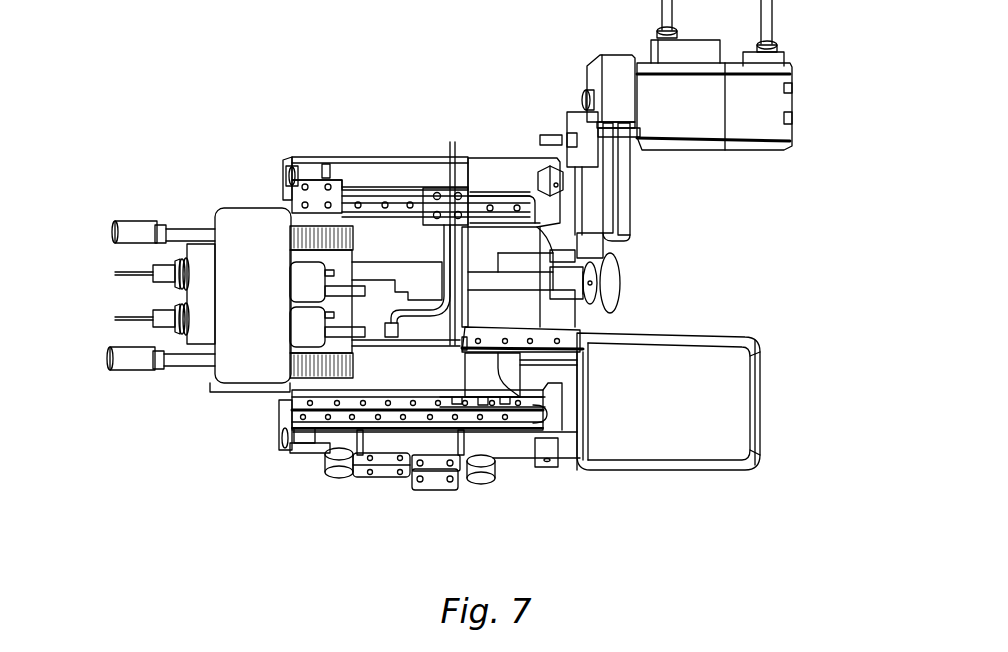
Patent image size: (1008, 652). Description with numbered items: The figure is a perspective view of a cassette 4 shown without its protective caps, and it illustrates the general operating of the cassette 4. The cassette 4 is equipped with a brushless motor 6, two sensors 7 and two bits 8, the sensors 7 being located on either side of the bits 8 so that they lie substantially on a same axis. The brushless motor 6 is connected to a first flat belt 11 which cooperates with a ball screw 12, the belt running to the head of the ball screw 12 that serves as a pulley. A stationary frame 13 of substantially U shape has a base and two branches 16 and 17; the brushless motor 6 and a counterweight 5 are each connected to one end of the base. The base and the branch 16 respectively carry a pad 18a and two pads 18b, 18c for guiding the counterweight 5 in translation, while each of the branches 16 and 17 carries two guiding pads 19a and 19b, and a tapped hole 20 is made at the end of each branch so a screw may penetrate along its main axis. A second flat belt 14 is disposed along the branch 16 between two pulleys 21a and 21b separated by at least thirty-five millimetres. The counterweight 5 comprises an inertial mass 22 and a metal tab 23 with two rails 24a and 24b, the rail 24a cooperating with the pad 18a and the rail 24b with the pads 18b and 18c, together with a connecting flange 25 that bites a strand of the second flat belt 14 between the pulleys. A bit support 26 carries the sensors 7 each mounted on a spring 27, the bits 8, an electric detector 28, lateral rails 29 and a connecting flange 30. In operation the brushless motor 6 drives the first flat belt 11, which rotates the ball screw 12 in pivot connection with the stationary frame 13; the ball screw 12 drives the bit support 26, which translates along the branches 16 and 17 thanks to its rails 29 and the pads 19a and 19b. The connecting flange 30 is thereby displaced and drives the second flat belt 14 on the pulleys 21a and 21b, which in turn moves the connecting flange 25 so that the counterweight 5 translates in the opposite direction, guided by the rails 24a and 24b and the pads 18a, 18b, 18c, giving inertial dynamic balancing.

The cassette 4 is at (219, 66).
The counterweight 5 is at (742, 382).
The brushless motor 6 is at (802, 98).
The sensors 7 is at (112, 230).
The bits 8 is at (112, 271).
The first flat belt 11 is at (638, 245).
The ball screw 12 is at (645, 286).
The stationary frame 13 is at (500, 148).
The second flat belt 14 is at (460, 492).
The branch 16 is at (318, 452).
The branch 17 is at (358, 156).
The pad 18a is at (578, 318).
The pad 18b is at (548, 440).
The pad 18c is at (330, 430).
The guiding pad 19a is at (438, 186).
The guiding pad 19b is at (322, 166).
The tapped hole 20 is at (284, 154).
The pulley 21a is at (339, 480).
The pulley 21b is at (489, 486).
The inertial mass 22 is at (758, 420).
The metal tab 23 is at (512, 370).
The rail 24a is at (583, 357).
The rail 24b is at (572, 440).
The connecting flange 25 is at (386, 480).
The bit support 26 is at (196, 396).
The spring 27 is at (290, 225).
The electric detector 28 is at (391, 322).
The lateral rails 29 is at (506, 205).
The connecting flange 30 is at (440, 490).